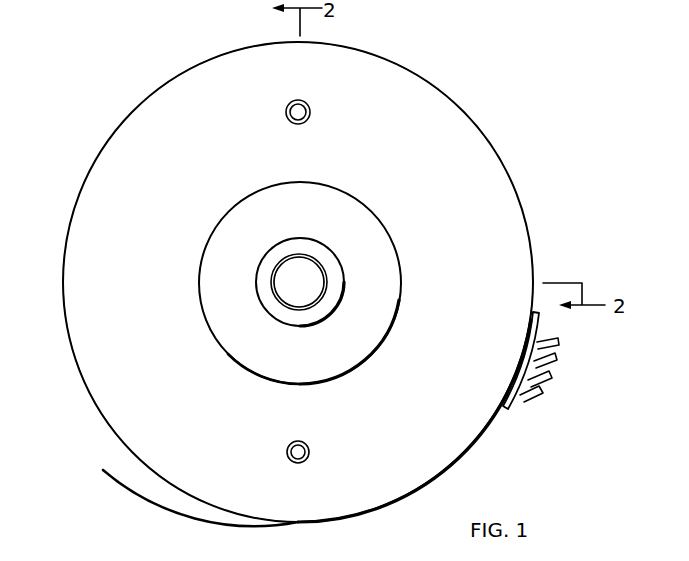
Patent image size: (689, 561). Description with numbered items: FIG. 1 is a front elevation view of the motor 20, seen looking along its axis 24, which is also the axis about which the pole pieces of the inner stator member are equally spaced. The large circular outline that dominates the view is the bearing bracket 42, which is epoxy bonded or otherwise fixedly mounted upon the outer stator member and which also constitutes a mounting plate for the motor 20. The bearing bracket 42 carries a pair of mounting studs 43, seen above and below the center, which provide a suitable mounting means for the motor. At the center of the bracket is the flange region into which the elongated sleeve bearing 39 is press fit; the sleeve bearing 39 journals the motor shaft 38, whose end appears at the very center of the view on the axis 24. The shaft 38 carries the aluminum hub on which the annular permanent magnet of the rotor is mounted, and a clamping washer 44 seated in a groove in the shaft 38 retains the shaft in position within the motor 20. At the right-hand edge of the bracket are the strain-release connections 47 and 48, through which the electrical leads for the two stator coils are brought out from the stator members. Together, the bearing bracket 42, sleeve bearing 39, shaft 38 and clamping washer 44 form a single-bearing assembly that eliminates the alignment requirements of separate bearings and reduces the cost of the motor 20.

The motor 20 is at (548, 195).
The axis 24 is at (298, 282).
The motor shaft 38 is at (287, 270).
The sleeve bearing 39 is at (357, 222).
The bearing bracket 42 is at (105, 392).
The mounting studs 43 is at (310, 113).
The clamping washer 44 is at (280, 312).
The strain-release connection 47 is at (538, 327).
The strain-release connection 48 is at (508, 409).